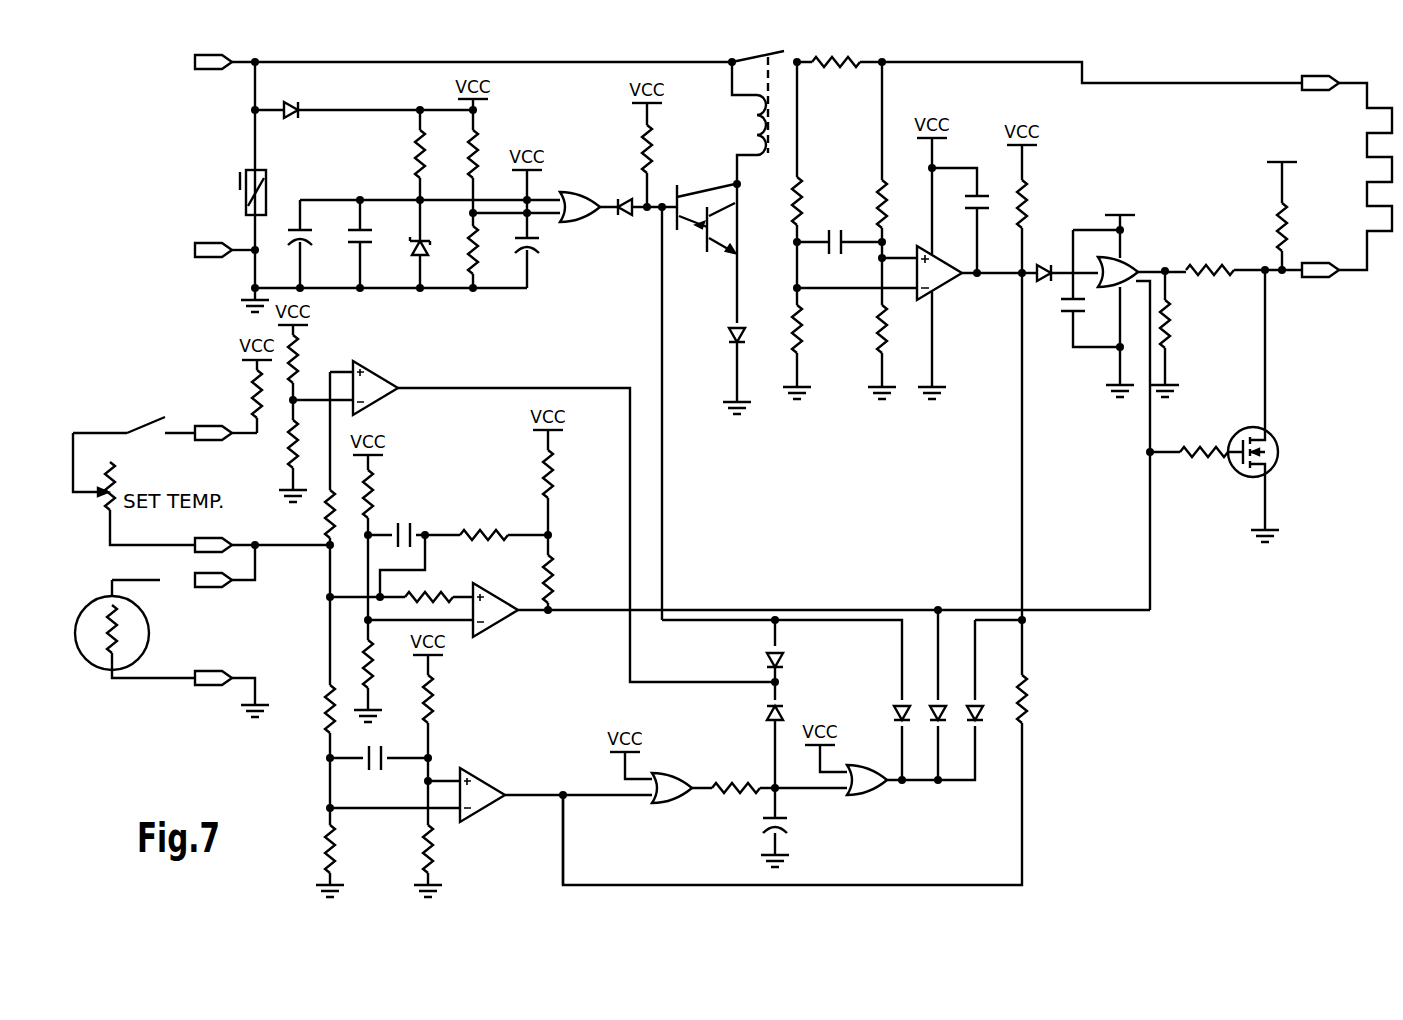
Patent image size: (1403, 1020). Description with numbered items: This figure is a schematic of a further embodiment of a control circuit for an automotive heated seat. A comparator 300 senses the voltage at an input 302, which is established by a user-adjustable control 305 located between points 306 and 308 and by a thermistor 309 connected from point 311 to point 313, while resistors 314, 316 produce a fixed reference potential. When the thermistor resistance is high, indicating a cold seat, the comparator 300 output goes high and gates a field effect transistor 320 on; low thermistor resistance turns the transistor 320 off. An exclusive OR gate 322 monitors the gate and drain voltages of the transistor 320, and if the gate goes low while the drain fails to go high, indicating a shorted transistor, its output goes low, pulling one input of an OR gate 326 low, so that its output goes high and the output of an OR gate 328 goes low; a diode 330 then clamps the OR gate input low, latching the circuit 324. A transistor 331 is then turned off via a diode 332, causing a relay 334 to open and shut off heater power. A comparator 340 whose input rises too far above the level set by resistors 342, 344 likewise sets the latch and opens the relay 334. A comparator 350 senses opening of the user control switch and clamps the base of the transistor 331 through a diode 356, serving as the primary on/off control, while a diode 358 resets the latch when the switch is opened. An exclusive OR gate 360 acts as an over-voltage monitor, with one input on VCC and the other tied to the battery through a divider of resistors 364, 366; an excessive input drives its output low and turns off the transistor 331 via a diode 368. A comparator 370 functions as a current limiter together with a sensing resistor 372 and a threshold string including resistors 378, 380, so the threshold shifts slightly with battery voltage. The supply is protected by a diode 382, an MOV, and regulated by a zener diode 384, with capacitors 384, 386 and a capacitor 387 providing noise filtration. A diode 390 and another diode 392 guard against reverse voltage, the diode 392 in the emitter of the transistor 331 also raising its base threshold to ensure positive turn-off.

The comparator 300 is at (494, 618).
The input 302 is at (433, 594).
The user-adjustable control 305 is at (93, 424).
The point 306 is at (215, 422).
The point 308 is at (220, 538).
The thermistor 309 is at (142, 614).
The point 311 is at (233, 587).
The point 313 is at (214, 687).
The resistor 314 is at (373, 473).
The resistor 316 is at (373, 655).
The field effect transistor 320 is at (1278, 445).
The exclusive OR gate 322 is at (1143, 252).
The circuit 324 is at (738, 845).
The OR gate 326 is at (675, 770).
The OR gate 328 is at (875, 790).
The diode 330 is at (984, 715).
The transistor 331 is at (696, 229).
The diode 332 is at (893, 710).
The relay 334 is at (727, 78).
The comparator 340 is at (486, 770).
The resistor 342 is at (432, 716).
The resistor 344 is at (431, 855).
The comparator 350 is at (395, 372).
The diode 356 is at (763, 658).
The diode 358 is at (766, 714).
The exclusive OR gate 360 is at (586, 224).
The resistor 364 is at (478, 135).
The resistor 366 is at (480, 270).
The diode 368 is at (628, 200).
The comparator 370 is at (948, 286).
The sensing resistor 372 is at (832, 65).
The resistor 378 is at (800, 352).
The resistor 380 is at (806, 196).
The diode 382 is at (268, 182).
The diode 384 is at (294, 228).
The capacitor 386 is at (365, 230).
The capacitor 387 is at (535, 251).
The diode 390 is at (293, 103).
The diode 392 is at (748, 328).